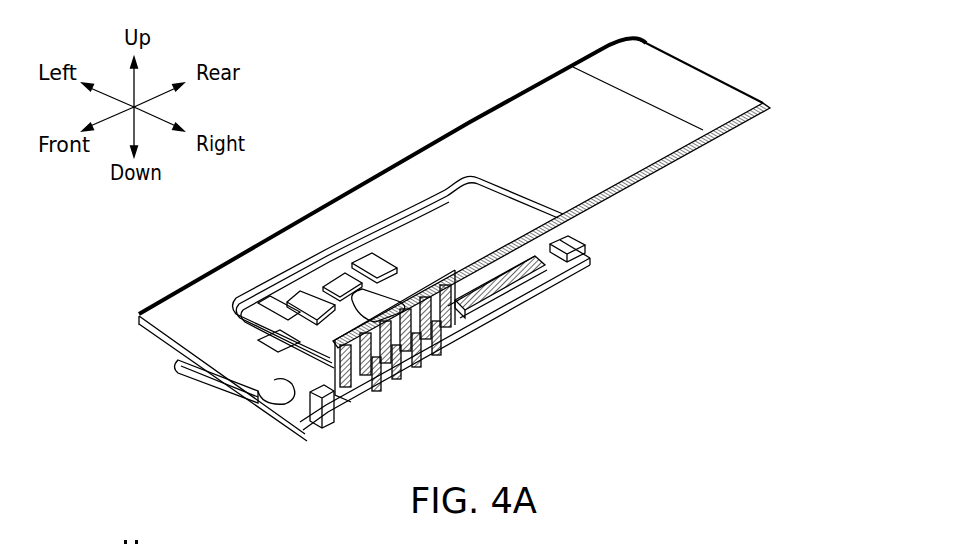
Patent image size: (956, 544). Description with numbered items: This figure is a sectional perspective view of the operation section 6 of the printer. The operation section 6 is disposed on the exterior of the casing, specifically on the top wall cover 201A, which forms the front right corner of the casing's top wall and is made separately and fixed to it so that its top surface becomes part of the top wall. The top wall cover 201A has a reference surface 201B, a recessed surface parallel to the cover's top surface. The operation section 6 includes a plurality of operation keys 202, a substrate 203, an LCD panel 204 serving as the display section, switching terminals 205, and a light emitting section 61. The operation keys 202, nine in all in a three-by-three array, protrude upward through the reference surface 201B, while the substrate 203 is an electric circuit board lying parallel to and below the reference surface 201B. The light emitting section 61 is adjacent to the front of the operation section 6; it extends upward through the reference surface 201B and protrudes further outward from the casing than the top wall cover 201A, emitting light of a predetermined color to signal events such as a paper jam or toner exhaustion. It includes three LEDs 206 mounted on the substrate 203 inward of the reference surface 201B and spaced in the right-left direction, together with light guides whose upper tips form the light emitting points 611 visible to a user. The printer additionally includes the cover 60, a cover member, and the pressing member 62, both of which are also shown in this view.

The operation section 6 is at (476, 231).
The cover 60 is at (450, 212).
The light emitting section 61 is at (315, 353).
The light emitting point 611 is at (282, 378).
The pressing member 62 is at (258, 303).
The top wall cover 201A is at (530, 115).
The reference surface 201B is at (567, 228).
The operation keys 202 is at (368, 252).
The substrate 203 is at (590, 272).
The LCD panel 204 is at (518, 288).
The switching terminals 205 is at (383, 393).
The LEDs 206 is at (322, 423).